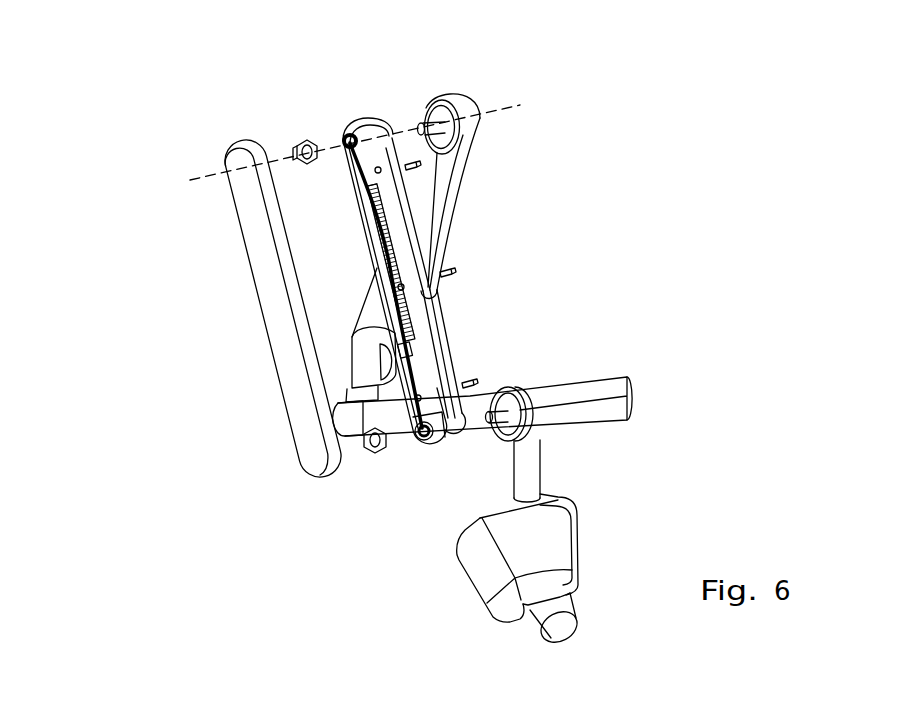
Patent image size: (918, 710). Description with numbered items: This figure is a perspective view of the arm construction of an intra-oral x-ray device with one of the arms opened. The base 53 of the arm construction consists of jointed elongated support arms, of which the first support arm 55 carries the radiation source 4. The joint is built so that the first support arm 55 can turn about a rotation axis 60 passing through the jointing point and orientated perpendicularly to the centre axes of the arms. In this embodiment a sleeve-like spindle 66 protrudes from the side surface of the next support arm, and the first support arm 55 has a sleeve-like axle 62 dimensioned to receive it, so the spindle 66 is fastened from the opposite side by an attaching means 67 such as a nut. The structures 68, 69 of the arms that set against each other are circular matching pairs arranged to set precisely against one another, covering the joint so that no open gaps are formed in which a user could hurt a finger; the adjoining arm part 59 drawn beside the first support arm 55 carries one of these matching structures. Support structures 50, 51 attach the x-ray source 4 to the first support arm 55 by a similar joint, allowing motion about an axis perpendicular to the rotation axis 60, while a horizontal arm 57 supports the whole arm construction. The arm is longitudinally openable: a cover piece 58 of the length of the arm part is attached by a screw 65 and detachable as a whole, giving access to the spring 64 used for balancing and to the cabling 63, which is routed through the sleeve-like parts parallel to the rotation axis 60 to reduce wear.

The radiation source 4 is at (470, 576).
The support structure 50 is at (540, 428).
The support structure 51 is at (540, 468).
The base 53 is at (137, 321).
The first support arm 55 is at (433, 365).
The horizontal arm 57 is at (587, 375).
The cover piece 58 is at (260, 287).
The upper link 59 is at (470, 147).
The rotation axis 60 is at (513, 110).
The sleeve-like axle 62 is at (345, 137).
The cabling 63 is at (410, 332).
The spring 64 is at (413, 300).
The screw 65 is at (452, 268).
The sleeve-like spindle 66 is at (428, 127).
The attaching means 67 is at (300, 148).
The structure 68 is at (347, 130).
The structure 69 is at (442, 110).